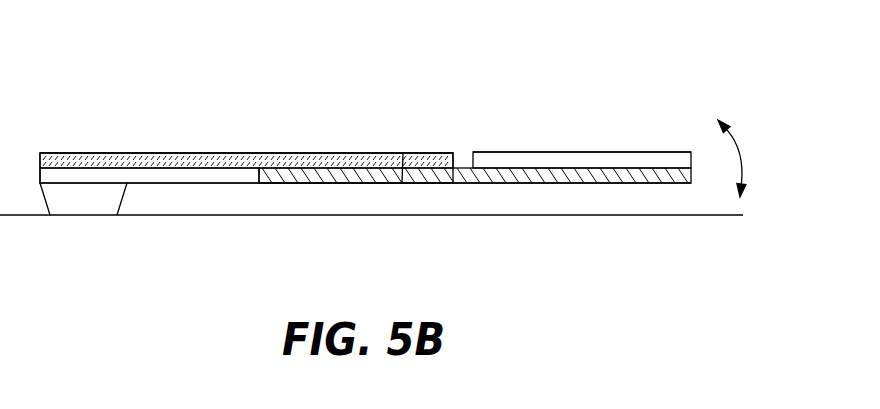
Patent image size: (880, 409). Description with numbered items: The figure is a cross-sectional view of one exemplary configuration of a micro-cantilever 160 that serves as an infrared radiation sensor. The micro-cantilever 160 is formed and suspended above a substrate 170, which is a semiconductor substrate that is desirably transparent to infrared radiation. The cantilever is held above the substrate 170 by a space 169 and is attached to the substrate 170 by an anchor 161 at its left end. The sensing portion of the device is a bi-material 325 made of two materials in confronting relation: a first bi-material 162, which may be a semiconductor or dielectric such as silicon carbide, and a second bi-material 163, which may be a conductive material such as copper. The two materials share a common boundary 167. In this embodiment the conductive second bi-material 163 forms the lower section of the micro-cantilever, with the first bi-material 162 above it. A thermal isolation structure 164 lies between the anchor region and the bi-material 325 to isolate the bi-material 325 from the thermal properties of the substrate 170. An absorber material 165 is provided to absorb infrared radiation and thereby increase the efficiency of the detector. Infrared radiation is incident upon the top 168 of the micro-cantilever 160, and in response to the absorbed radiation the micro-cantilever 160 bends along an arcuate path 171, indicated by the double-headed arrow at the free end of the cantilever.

The micro-cantilever 160 is at (254, 105).
The anchor 161 is at (90, 205).
The first bi-material 162 is at (322, 158).
The second bi-material 163 is at (623, 175).
The thermal isolation structure 164 is at (186, 176).
The absorber material 165 is at (590, 158).
The common boundary 167 is at (278, 162).
The top of the micro-cantilever 168 is at (538, 152).
The space 169 is at (502, 203).
The substrate 170 is at (400, 270).
The arcuate path 171 is at (735, 150).
The bi-material 325 is at (403, 153).